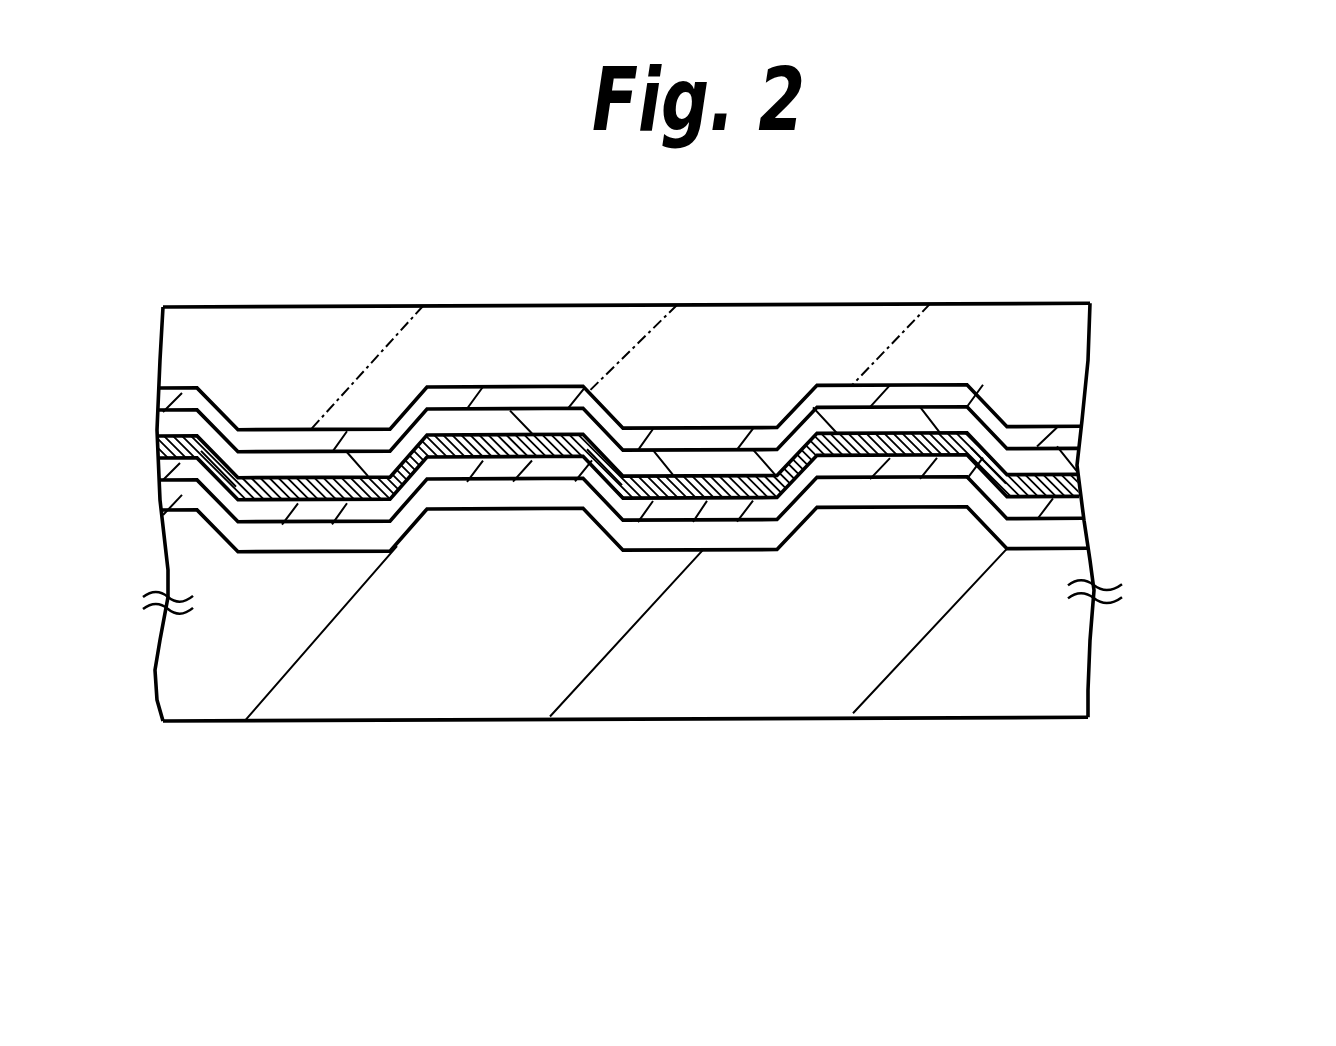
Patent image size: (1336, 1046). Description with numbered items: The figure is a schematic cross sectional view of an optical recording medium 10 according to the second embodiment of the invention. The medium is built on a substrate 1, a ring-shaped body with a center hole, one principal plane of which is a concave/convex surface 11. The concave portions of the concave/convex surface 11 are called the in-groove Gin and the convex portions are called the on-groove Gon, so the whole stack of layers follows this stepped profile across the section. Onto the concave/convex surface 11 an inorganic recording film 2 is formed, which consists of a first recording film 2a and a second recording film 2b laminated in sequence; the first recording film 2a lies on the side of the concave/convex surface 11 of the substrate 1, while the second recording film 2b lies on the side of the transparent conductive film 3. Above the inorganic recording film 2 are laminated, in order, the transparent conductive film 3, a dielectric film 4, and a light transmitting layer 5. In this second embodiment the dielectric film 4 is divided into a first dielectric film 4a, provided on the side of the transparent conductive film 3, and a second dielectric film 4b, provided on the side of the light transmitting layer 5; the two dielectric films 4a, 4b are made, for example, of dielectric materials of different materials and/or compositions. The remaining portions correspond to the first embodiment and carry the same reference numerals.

The optical recording medium 10 is at (893, 236).
The substrate 1 is at (1070, 660).
The inorganic recording film 2 is at (1213, 506).
The first recording film 2a is at (1073, 536).
The second recording film 2b is at (1073, 511).
The transparent conductive film 3 is at (1083, 479).
The dielectric film 4 is at (1213, 392).
The first dielectric film 4a is at (1073, 462).
The second dielectric film 4b is at (1073, 431).
The light transmitting layer 5 is at (1072, 366).
The concave/convex surface 11 is at (582, 804).
The in-groove Gin is at (321, 553).
The on-groove Gon is at (515, 512).